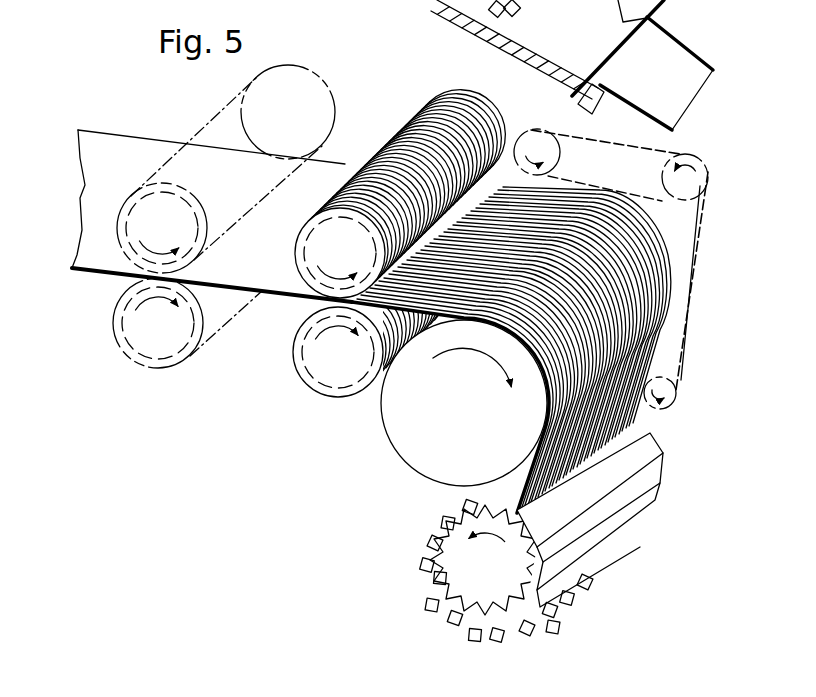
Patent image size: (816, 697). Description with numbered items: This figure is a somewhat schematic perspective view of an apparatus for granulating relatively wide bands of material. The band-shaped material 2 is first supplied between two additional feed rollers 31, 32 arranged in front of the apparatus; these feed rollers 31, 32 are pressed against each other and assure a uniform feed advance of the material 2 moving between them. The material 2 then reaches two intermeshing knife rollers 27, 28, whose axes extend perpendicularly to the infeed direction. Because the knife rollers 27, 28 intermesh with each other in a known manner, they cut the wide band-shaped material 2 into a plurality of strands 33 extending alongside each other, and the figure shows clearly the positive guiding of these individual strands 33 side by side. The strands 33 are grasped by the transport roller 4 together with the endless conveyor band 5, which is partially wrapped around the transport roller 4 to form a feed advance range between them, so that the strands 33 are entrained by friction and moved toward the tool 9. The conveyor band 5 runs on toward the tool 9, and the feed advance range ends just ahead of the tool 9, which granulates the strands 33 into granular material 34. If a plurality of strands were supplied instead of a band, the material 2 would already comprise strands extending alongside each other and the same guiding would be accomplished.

The material 2 is at (330, 166).
The transport roller 4 is at (410, 458).
The endless conveyor band 5 is at (702, 246).
The tool 9 is at (617, 517).
The knife roller 27 is at (446, 92).
The knife roller 28 is at (330, 378).
The feed roller 31 is at (224, 122).
The feed roller 32 is at (167, 362).
The strands 33 is at (518, 196).
The granular material 34 is at (427, 605).